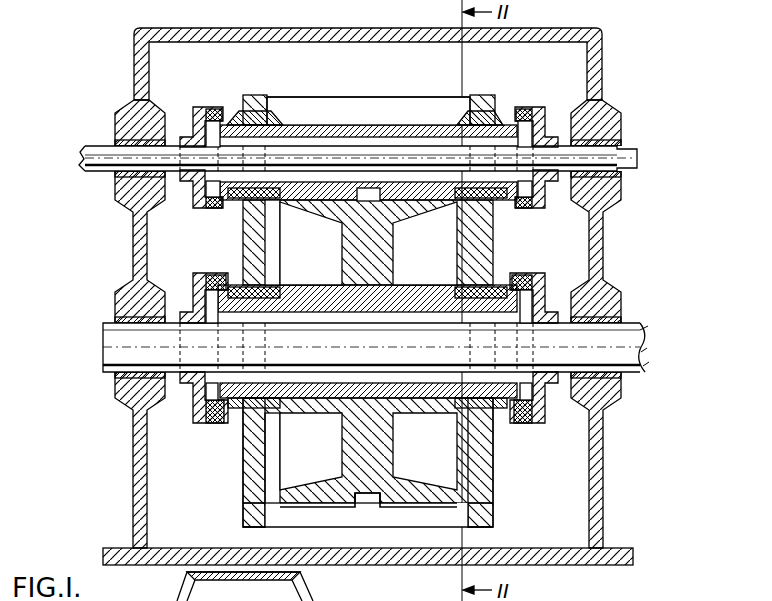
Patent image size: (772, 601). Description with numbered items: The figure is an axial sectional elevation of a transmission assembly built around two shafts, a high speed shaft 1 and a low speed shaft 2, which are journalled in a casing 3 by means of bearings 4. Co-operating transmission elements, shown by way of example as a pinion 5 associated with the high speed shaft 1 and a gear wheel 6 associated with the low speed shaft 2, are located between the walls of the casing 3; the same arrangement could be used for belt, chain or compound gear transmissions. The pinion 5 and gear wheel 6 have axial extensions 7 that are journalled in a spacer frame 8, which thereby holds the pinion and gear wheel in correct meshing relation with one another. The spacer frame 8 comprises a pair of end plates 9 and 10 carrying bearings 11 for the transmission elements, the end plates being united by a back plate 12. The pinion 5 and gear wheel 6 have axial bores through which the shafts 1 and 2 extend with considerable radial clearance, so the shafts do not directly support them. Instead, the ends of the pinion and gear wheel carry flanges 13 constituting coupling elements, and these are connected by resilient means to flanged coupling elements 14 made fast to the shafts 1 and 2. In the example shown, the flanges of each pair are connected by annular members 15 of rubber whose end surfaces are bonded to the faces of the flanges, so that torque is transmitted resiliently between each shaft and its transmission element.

The high speed shaft 1 is at (100, 160).
The low speed shaft 2 is at (632, 340).
The casing 3 is at (594, 475).
The bearings 4 is at (115, 142).
The pinion 5 is at (403, 127).
The gear wheel 6 is at (423, 494).
The axial extensions 7 is at (262, 95).
The spacer frame 8 is at (313, 98).
The end plate 9 is at (248, 516).
The end plate 10 is at (490, 517).
The bearings 11 is at (272, 118).
The back plate 12 is at (357, 97).
The flanges 13 is at (220, 112).
The flanged coupling elements 14 is at (190, 117).
The annular members of rubber 15 is at (214, 108).